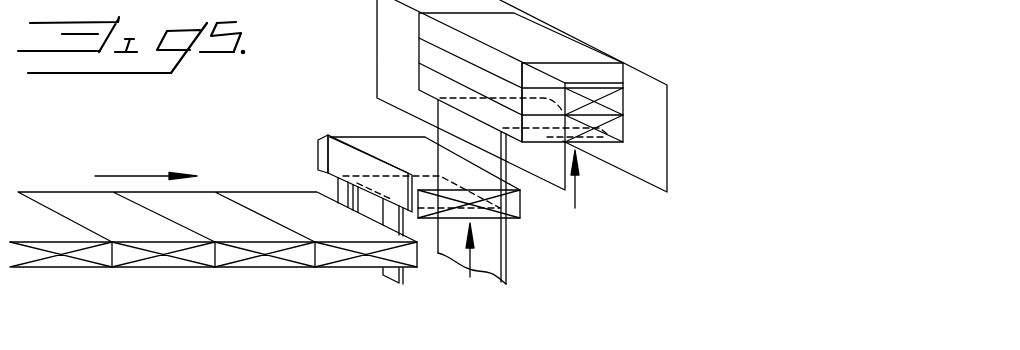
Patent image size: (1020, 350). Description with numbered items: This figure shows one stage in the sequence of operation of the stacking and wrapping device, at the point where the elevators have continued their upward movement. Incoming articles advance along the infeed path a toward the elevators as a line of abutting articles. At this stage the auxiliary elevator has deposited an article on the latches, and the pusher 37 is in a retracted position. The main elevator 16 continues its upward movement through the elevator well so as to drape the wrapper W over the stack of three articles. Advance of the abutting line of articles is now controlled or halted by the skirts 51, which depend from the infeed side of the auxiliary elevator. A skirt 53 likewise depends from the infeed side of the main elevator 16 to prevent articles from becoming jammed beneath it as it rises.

The conveyor a is at (165, 267).
The pusher 37 is at (329, 135).
The skirts 51 is at (338, 188).
The main elevator 16 is at (548, 135).
The skirt 53 is at (507, 265).
The wrapper W is at (667, 163).